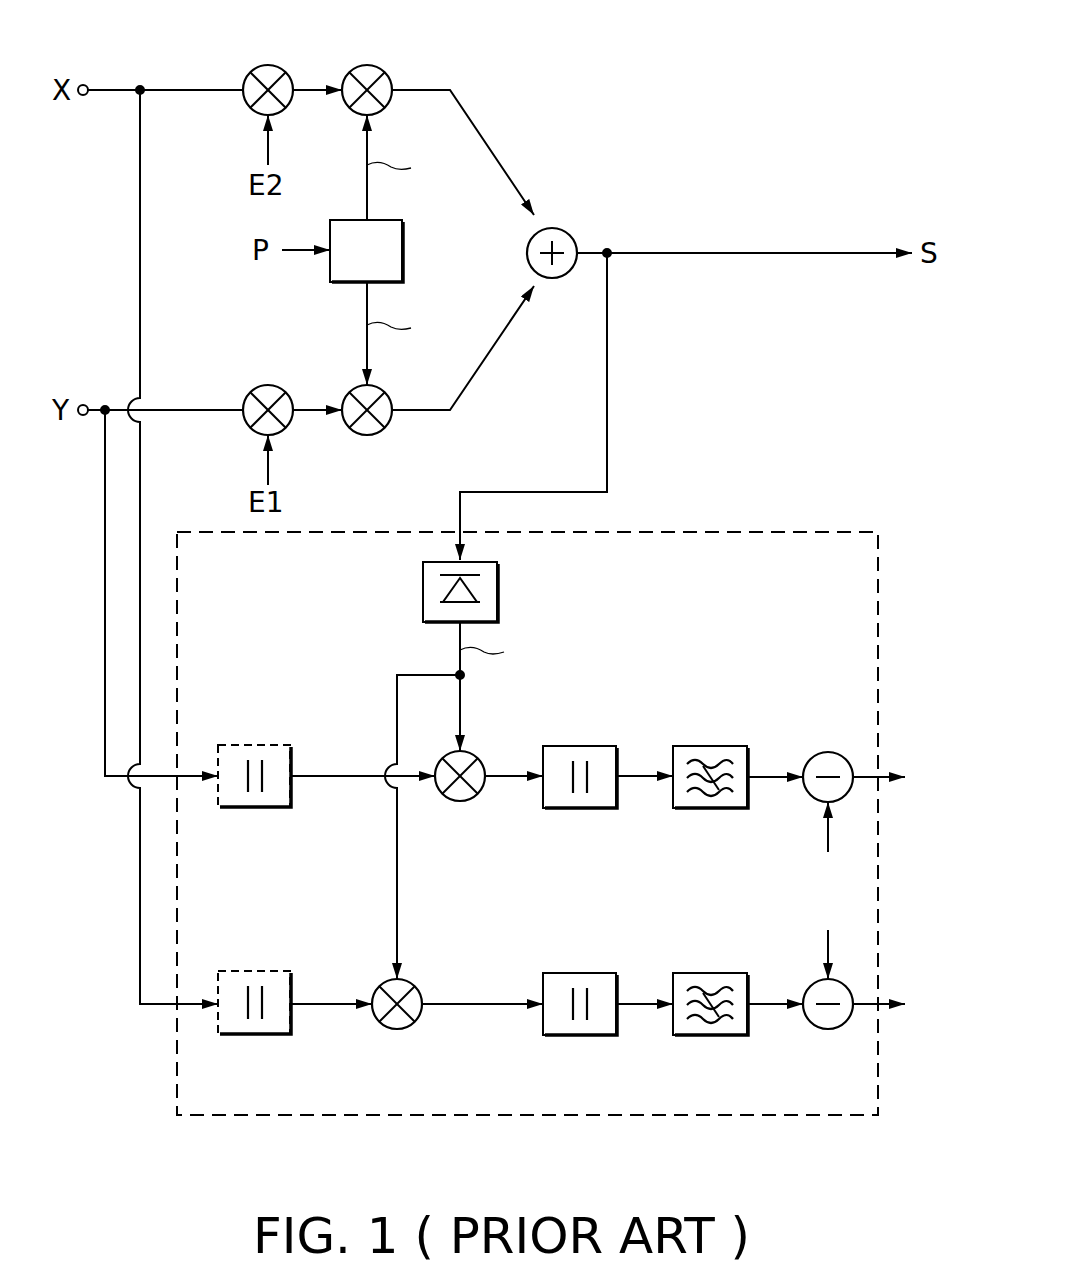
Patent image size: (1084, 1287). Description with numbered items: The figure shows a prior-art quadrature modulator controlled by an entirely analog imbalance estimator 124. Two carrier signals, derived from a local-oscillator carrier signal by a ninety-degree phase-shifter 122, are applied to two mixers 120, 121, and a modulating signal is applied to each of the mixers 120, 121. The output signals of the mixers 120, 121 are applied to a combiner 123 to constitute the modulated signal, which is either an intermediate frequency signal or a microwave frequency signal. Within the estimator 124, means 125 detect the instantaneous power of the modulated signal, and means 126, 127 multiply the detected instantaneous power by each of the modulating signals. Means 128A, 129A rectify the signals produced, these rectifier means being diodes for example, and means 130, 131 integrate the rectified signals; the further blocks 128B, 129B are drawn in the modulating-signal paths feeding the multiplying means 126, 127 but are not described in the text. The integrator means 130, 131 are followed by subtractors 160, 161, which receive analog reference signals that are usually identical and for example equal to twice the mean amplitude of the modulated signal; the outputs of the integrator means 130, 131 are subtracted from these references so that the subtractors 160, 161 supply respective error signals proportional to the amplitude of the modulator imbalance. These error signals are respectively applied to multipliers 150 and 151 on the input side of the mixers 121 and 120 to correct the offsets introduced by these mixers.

The mixer 120 is at (367, 72).
The mixer 121 is at (367, 430).
The 90° phase-shifter 122 is at (402, 268).
The combiner 123 is at (567, 238).
The estimator 124 is at (806, 544).
The means for detecting instantaneous power 125 is at (436, 592).
The multiplying means 126 is at (460, 801).
The multiplying means 127 is at (397, 1029).
The rectifier means 128A is at (556, 750).
The absolute value circuit 128B is at (230, 745).
The rectifier means 129A is at (556, 982).
The absolute value circuit 129B is at (231, 972).
The integrator means 130 is at (680, 750).
The integrator means 131 is at (680, 982).
The multiplier 150 is at (268, 392).
The multiplier 151 is at (268, 72).
The subtractor 160 is at (827, 752).
The subtractor 161 is at (828, 1029).